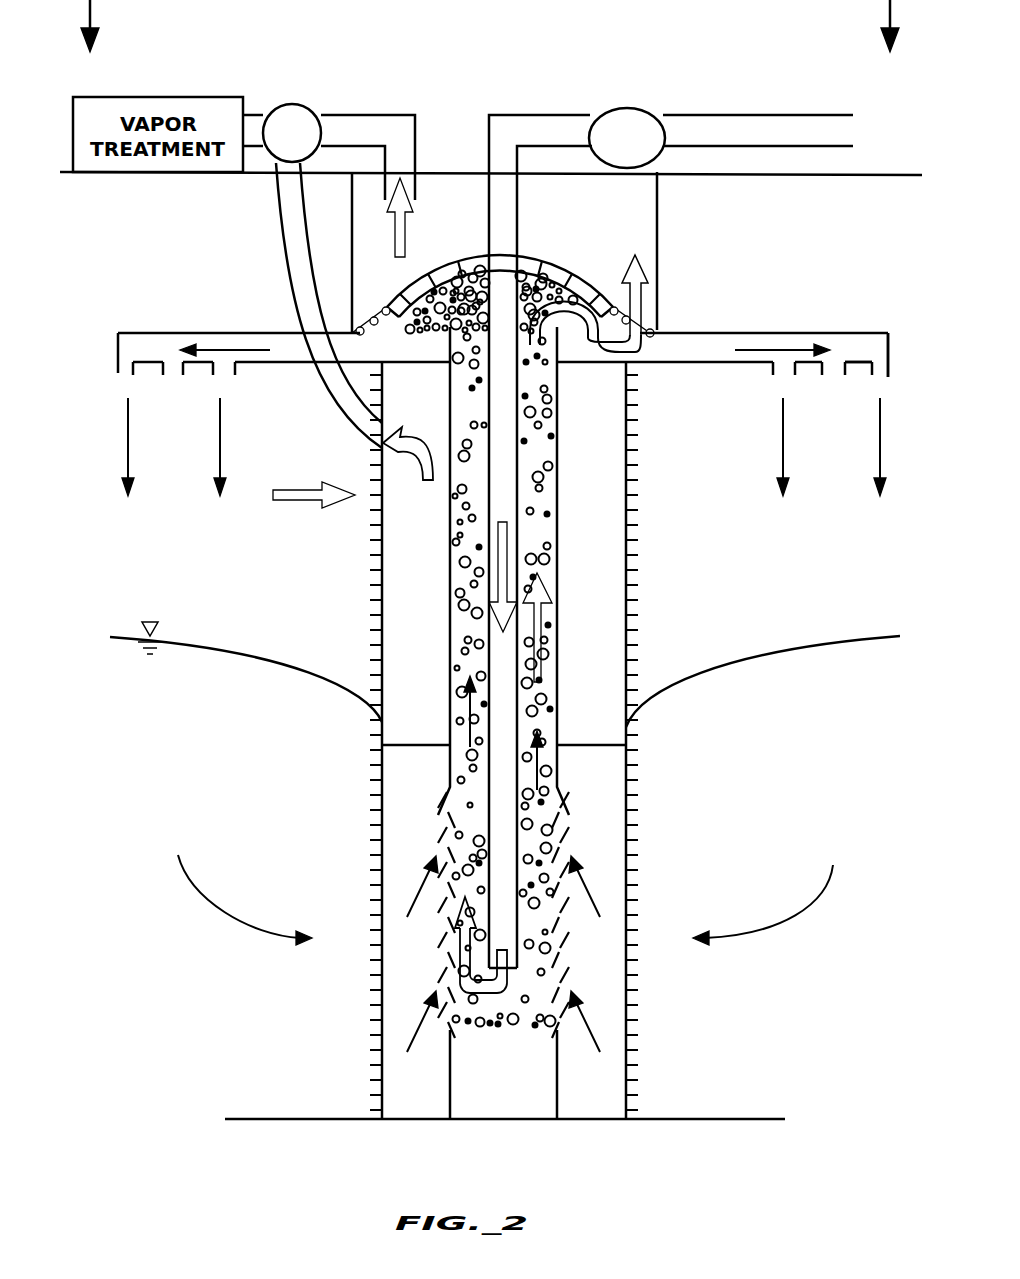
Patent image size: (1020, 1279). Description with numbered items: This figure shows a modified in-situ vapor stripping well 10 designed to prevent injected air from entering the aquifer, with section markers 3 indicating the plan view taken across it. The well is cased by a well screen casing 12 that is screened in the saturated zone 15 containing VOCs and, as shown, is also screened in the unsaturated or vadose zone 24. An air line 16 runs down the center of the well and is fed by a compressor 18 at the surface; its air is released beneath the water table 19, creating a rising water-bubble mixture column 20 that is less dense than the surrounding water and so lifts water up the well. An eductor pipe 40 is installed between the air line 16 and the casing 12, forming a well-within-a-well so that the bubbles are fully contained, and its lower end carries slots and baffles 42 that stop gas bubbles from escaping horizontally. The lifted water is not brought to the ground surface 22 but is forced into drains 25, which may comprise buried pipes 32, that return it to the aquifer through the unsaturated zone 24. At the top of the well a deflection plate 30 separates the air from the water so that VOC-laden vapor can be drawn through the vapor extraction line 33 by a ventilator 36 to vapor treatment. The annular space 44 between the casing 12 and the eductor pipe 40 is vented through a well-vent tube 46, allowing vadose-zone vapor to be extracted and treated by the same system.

The section line 3- 3 is at (490, 43).
The well 10 is at (218, 925).
The well screen casing 12 is at (633, 435).
The saturated zone 15 is at (210, 756).
The air line 16 is at (530, 118).
The compressor 18 is at (628, 110).
The water table 19 is at (870, 636).
The water-bubble mixture column 20 is at (557, 630).
The ground surface 22 is at (757, 172).
The unsaturated zone 24 is at (836, 458).
The drains 25 is at (745, 328).
The deflection plate 30 is at (565, 265).
The buried pipes 32 is at (867, 333).
The vapor extraction line 33 is at (384, 117).
The ventilator 36 is at (292, 108).
The eductor pipe 40 is at (549, 578).
The slots and baffles 42 is at (598, 846).
The annular space 44 is at (608, 772).
The well-vent tube 46 is at (290, 270).